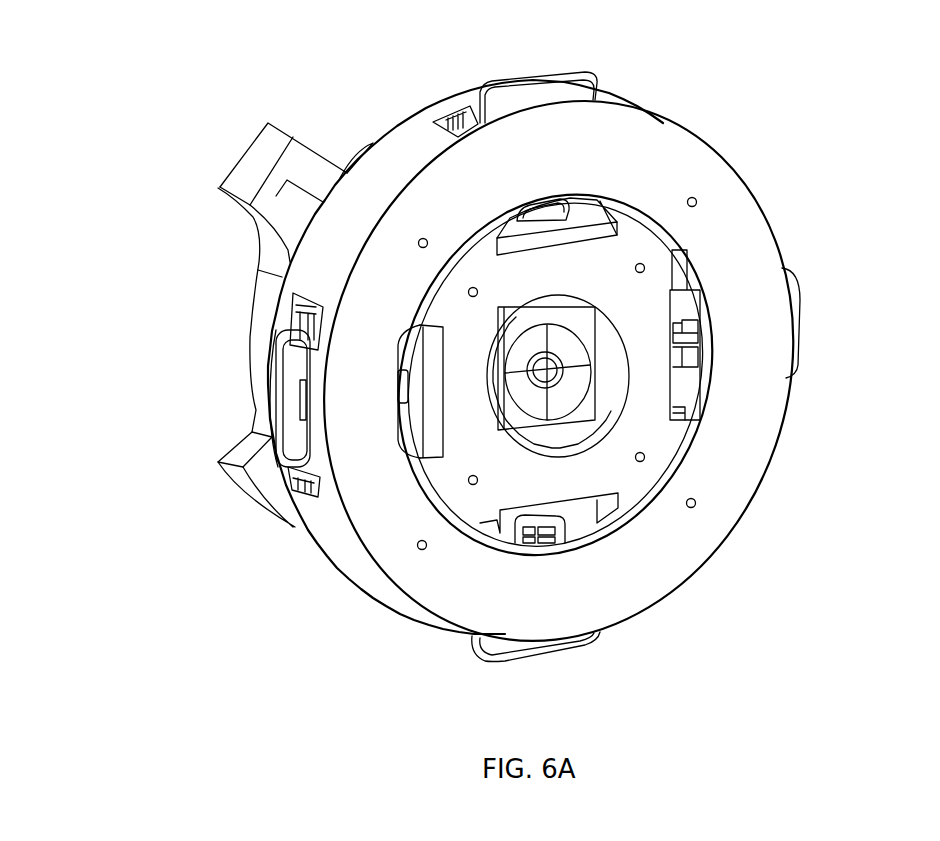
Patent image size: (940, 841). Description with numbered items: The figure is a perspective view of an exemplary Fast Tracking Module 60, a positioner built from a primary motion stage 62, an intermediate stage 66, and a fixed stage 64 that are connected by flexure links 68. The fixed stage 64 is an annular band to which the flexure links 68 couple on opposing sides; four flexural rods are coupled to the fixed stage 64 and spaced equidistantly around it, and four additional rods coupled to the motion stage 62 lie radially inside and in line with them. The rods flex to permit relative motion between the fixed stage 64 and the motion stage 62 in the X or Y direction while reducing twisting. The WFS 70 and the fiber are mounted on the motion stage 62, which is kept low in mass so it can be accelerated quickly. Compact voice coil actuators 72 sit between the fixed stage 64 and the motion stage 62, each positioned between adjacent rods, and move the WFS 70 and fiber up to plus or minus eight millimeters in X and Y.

The Fast Tracking Module 60 is at (535, 363).
The primary motion stage 62 is at (608, 458).
The fixed stage 64 is at (558, 371).
The intermediate stage 66 is at (248, 163).
The flexure links 68 is at (310, 192).
The WFS 70 is at (570, 392).
The compact voice coil actuators 72 is at (680, 397).